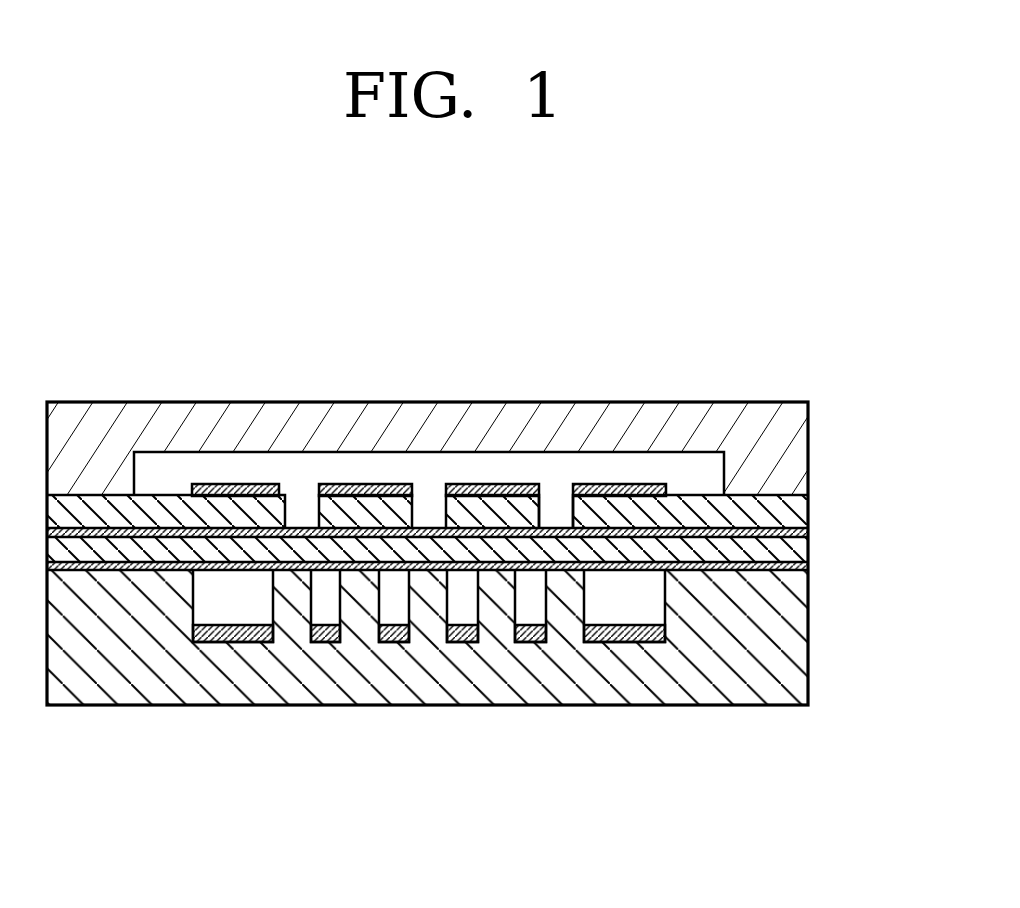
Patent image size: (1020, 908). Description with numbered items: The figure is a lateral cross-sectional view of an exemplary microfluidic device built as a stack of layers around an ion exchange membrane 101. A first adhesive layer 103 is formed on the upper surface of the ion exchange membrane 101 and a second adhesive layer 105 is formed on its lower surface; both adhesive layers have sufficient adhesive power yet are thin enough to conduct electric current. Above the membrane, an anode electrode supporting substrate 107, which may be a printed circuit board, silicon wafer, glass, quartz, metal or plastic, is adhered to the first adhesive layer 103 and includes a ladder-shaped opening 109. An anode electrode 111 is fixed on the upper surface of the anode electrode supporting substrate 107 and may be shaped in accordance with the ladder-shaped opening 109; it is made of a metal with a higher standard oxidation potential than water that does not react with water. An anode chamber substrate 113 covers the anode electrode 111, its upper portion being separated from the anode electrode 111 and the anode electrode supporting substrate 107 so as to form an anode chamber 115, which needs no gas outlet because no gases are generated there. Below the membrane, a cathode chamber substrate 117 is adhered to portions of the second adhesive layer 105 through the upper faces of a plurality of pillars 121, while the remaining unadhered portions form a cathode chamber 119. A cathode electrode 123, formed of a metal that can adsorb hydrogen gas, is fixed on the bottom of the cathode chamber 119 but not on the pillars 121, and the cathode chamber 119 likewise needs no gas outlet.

The ion exchange membrane 101 is at (808, 552).
The first adhesive layer 103 is at (808, 533).
The second adhesive layer 105 is at (808, 571).
The anode electrode supporting substrate 107 is at (808, 501).
The ladder-shaped opening 109 is at (557, 512).
The anode electrode 111 is at (638, 492).
The anode chamber substrate 113 is at (808, 428).
The anode chamber 115 is at (705, 470).
The cathode chamber substrate 117 is at (797, 660).
The cathode chamber 119 is at (238, 603).
The pillars 121 is at (397, 615).
The cathode electrode 123 is at (533, 615).